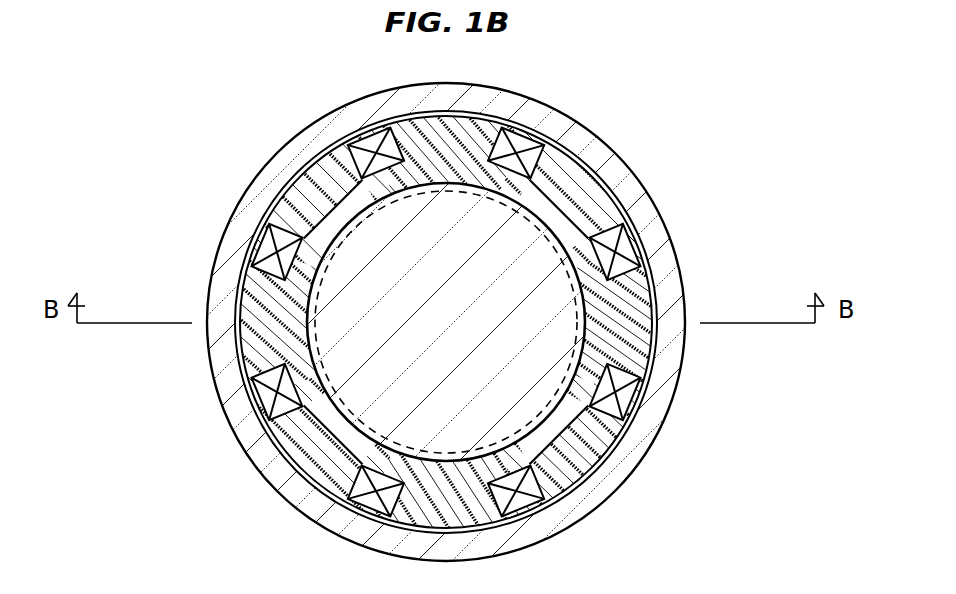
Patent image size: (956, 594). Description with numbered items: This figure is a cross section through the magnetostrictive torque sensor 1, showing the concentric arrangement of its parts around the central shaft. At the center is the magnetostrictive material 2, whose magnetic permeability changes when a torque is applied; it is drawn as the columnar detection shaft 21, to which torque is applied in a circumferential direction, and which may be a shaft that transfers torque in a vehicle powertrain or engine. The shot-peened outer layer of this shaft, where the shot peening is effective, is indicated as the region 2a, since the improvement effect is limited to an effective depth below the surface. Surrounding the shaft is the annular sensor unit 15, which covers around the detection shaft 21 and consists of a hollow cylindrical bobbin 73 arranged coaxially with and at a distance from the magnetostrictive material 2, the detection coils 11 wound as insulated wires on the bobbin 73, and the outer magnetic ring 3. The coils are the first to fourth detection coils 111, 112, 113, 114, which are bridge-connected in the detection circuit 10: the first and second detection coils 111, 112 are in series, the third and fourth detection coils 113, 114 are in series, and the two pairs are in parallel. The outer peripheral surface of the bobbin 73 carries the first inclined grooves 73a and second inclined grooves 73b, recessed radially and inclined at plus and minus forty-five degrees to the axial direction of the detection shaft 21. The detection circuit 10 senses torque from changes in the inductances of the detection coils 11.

The magnetostrictive torque sensor 1 is at (478, 320).
The sensor unit 15 is at (478, 322).
The magnetic ring 3 is at (268, 468).
The detection circuit 10 is at (469, 313).
The bobbin 73 is at (469, 313).
The first inclined grooves 73a is at (518, 322).
The second inclined grooves 73b is at (652, 258).
The detection coils 11 is at (541, 128).
The first detection coil 111 is at (525, 289).
The second detection coil 112 is at (446, 289).
The third detection coil 113 is at (446, 289).
The fourth detection coil 114 is at (446, 289).
The magnetostrictive material 2 is at (427, 325).
The detection shaft 21 is at (373, 332).
The region where shot peening is effective 2a is at (308, 358).